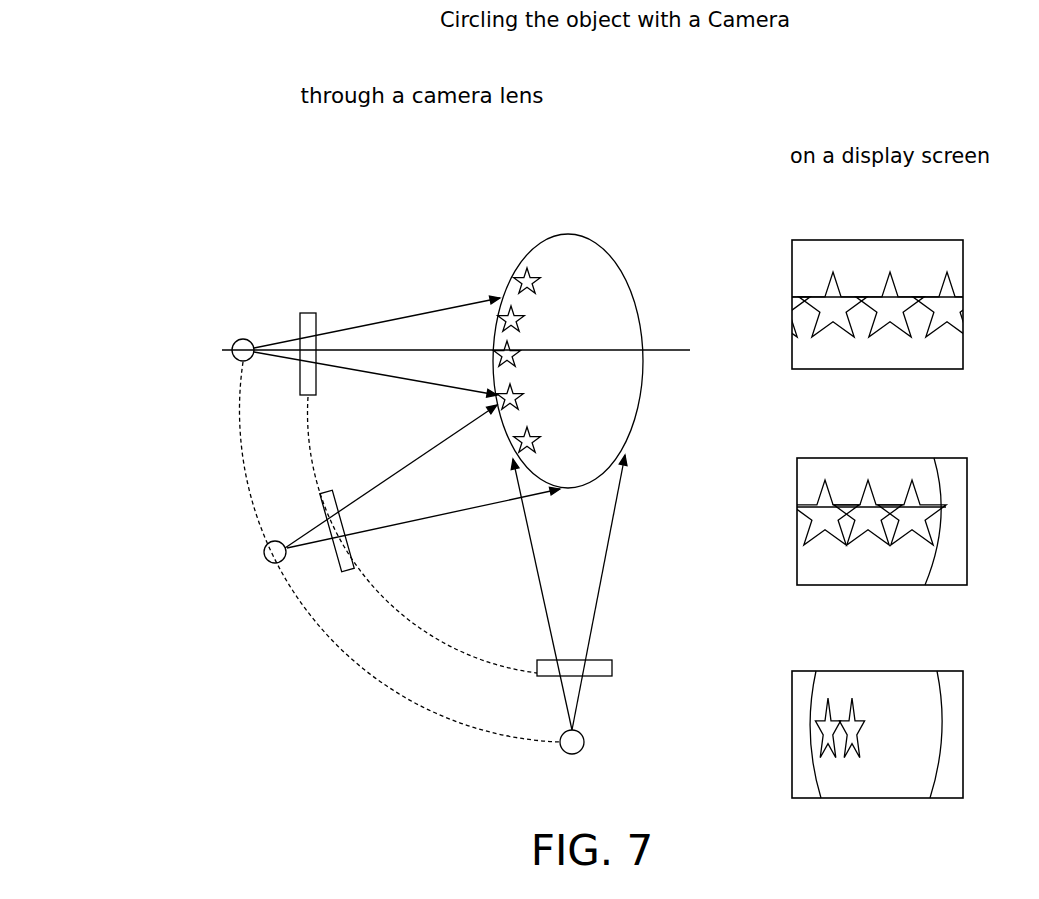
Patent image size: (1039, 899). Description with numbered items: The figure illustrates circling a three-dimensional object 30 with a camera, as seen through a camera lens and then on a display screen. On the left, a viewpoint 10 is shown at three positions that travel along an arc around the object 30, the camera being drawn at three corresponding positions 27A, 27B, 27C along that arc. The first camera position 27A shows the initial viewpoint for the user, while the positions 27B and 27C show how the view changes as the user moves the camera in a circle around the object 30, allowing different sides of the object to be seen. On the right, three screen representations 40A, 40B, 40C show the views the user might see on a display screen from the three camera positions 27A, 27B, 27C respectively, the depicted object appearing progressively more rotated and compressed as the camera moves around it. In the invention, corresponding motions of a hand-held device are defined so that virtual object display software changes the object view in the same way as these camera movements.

The viewpoint 10 is at (163, 313).
The camera position 27A is at (309, 318).
The camera position 27B is at (346, 505).
The camera position 27C is at (545, 647).
The object 30 is at (568, 329).
The screen representation 40A is at (861, 284).
The screen representation 40B is at (879, 501).
The screen representation 40C is at (877, 717).